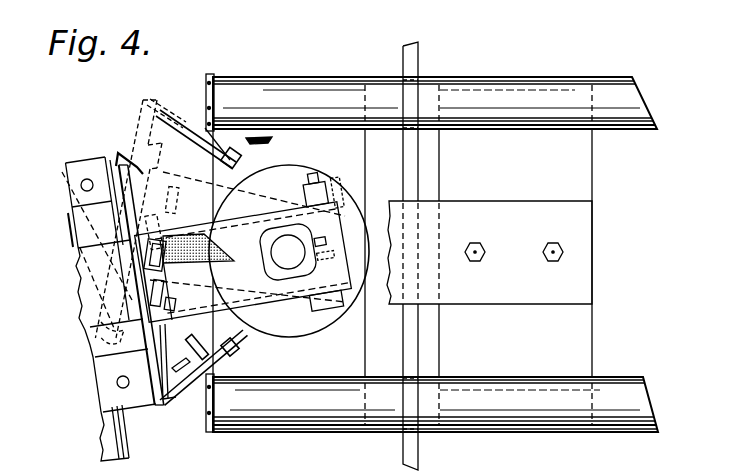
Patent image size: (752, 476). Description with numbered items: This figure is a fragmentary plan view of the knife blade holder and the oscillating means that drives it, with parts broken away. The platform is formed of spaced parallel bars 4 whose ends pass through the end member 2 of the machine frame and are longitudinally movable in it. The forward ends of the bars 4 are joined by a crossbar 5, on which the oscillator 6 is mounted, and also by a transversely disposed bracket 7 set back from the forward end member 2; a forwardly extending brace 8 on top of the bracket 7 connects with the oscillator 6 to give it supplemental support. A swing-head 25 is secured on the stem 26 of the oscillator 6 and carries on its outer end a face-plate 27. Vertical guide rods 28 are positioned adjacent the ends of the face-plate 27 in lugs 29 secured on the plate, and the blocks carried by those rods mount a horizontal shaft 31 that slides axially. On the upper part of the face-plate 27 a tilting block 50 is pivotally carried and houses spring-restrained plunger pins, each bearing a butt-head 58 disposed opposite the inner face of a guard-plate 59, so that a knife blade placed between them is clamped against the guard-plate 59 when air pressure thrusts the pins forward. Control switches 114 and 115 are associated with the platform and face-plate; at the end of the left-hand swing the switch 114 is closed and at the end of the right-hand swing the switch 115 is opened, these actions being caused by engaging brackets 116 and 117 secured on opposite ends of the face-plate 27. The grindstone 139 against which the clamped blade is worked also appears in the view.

The end member 2 is at (403, 455).
The parallel bars 4 is at (600, 78).
The crossbar 5 is at (289, 255).
The oscillator 6 is at (305, 166).
The bracket 7 is at (515, 255).
The brace 8 is at (489, 252).
The swing-head 25 is at (244, 253).
The stem 26 is at (297, 250).
The face-plate 27 is at (142, 106).
The vertical guide rods 28 is at (81, 185).
The lugs 29 is at (80, 161).
The horizontal shaft 31 is at (103, 440).
The tilting block 50 is at (110, 283).
The butt-head 58 is at (166, 266).
The guard-plate 59 is at (177, 194).
The control switch 114 is at (209, 138).
The control switch 115 is at (195, 387).
The engaging bracket 116 is at (117, 152).
The engaging bracket 117 is at (166, 402).
The grindstone 139 is at (188, 238).